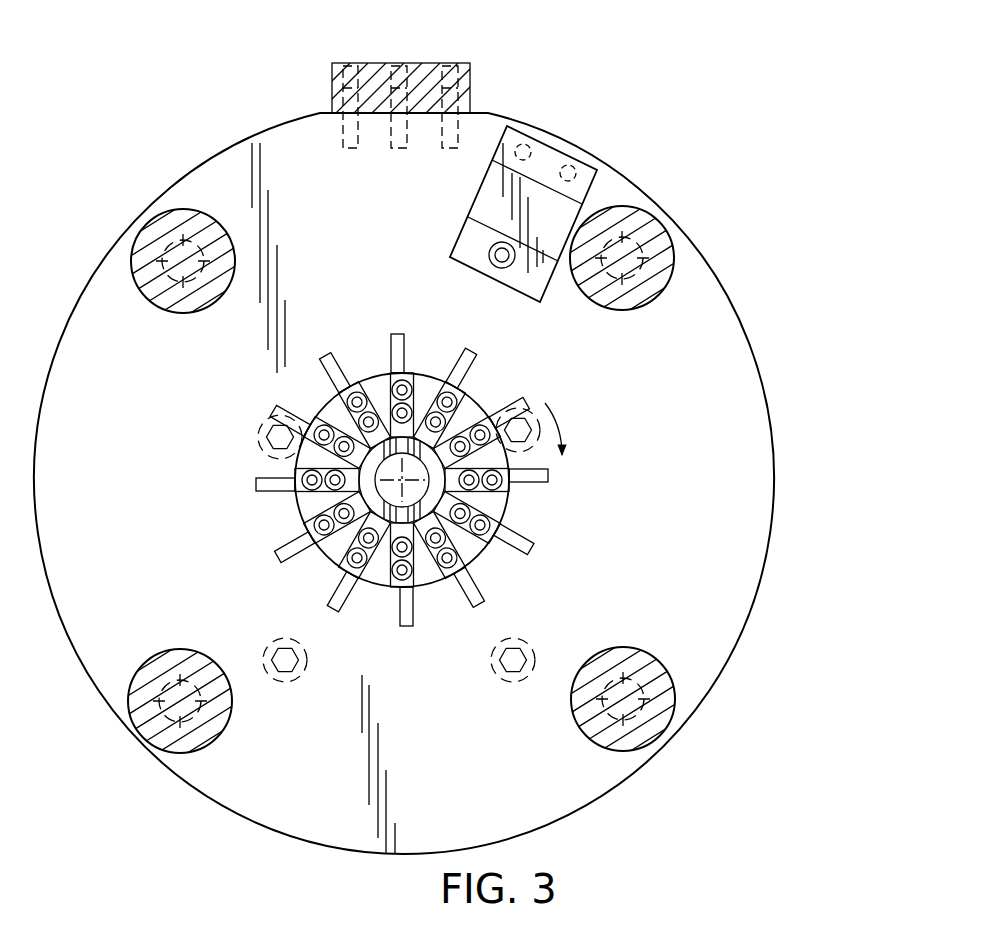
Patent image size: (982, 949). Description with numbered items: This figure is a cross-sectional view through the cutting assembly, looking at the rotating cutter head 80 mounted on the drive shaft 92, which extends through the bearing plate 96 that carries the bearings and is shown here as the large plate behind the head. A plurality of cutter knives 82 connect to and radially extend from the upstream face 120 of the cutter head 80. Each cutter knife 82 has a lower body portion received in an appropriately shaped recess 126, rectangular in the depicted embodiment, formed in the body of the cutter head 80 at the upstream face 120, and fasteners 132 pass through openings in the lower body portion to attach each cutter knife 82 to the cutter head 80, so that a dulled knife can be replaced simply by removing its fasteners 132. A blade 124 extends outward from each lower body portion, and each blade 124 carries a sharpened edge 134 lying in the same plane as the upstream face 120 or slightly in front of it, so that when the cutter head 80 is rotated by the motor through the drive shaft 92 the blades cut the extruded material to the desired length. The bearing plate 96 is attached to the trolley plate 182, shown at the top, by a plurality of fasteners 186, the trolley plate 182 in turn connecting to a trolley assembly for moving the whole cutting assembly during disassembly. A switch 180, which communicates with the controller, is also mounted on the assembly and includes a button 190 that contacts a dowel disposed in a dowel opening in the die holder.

The cutter head 80 is at (360, 360).
The cutter knives 82 is at (266, 496).
The drive shaft 92 is at (410, 463).
The bearing plate 96 is at (738, 382).
The upstream face 120 is at (470, 548).
The blade 124 is at (520, 540).
The recesses 126 is at (388, 555).
The fasteners 132 is at (378, 545).
The sharpened edge 134 is at (468, 363).
The switch 180 is at (538, 280).
The trolley plate 182 is at (427, 63).
The fasteners 186 is at (332, 90).
The button 190 is at (489, 250).